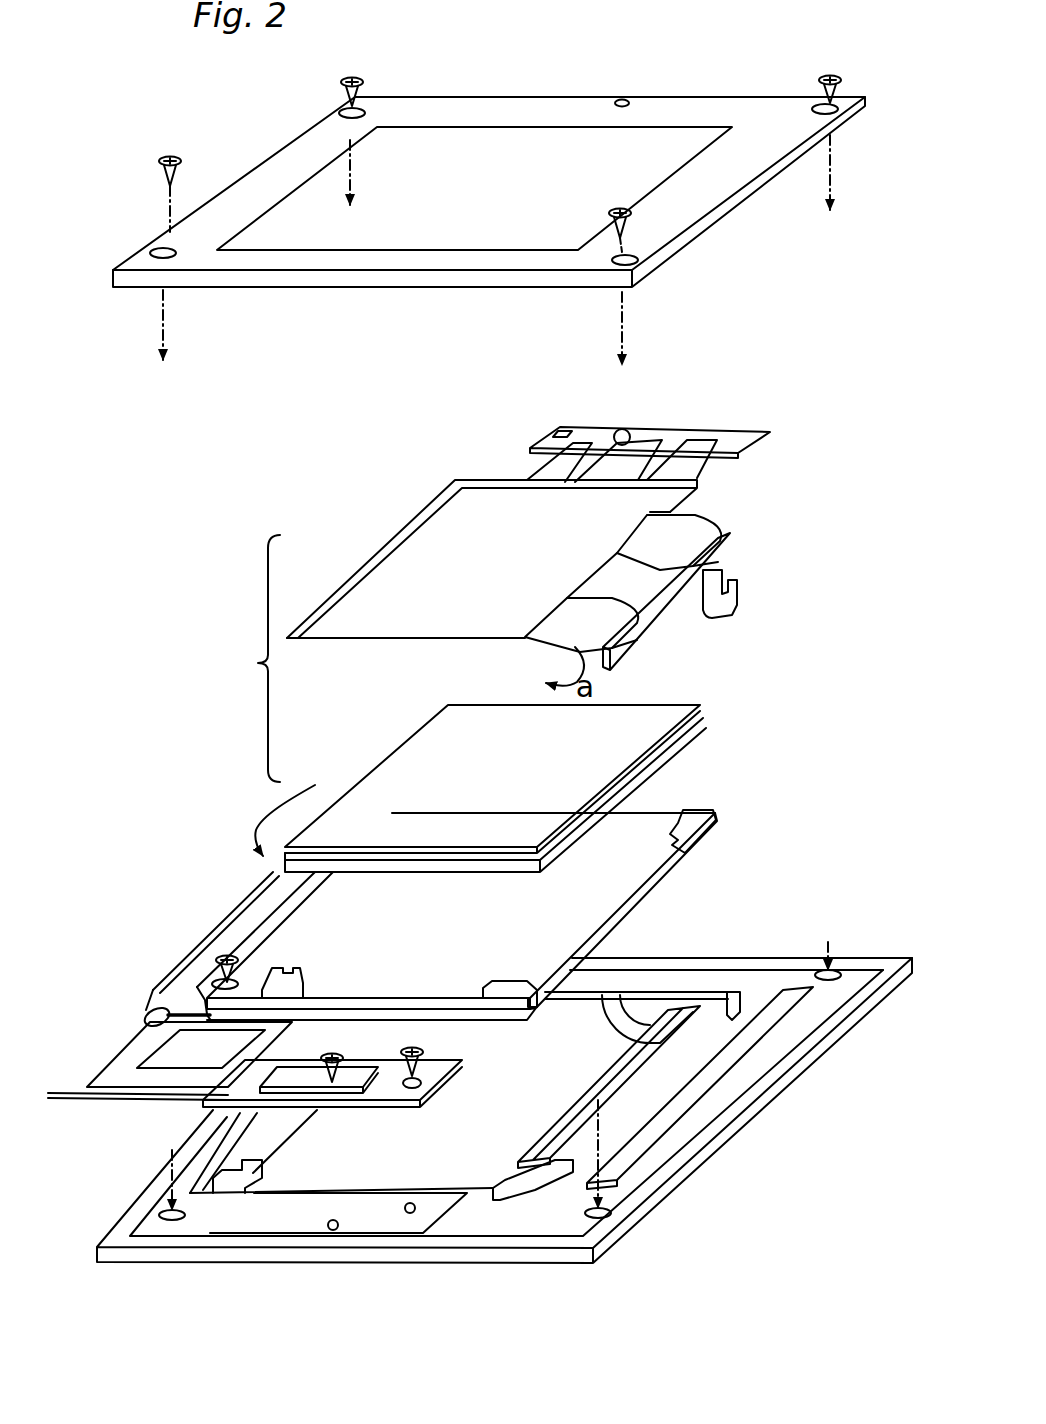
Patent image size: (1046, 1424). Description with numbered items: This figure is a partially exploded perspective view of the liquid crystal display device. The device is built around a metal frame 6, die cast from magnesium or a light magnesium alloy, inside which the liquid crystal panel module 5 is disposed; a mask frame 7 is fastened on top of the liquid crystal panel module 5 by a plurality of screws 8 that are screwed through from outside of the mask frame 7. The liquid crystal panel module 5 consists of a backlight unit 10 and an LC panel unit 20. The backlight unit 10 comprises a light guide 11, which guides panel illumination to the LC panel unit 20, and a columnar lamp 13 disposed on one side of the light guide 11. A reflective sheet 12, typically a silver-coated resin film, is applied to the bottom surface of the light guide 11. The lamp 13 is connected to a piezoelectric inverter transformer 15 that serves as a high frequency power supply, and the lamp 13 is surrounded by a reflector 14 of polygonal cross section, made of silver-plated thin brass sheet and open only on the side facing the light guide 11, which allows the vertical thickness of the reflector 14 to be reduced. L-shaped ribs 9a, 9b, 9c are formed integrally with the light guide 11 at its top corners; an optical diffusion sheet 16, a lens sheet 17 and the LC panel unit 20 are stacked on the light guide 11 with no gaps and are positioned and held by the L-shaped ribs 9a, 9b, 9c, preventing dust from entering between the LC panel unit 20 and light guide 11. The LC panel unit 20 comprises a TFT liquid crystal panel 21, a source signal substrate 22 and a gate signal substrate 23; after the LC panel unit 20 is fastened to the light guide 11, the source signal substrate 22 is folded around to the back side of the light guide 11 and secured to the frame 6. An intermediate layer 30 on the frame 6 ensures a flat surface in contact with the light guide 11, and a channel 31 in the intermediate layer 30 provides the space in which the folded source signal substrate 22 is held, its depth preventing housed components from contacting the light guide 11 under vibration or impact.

The liquid crystal panel module 5 is at (248, 658).
The metal frame 6 is at (448, 1256).
The mask frame 7 is at (300, 133).
The screws 8 is at (168, 157).
The L-shaped rib 9a is at (300, 972).
The L-shaped rib 9b is at (515, 980).
The L-shaped rib 9c is at (714, 812).
The backlight unit 10 is at (294, 802).
The light guide 11 is at (677, 860).
The reflective sheet 12 is at (612, 922).
The columnar lamp 13 is at (146, 1016).
The reflector 14 is at (212, 935).
The piezoelectric inverter transformer 15 is at (218, 1107).
The optical diffusion sheet 16 is at (680, 748).
The lens sheet 17 is at (685, 706).
The LC panel unit 20 is at (332, 596).
The TFT liquid crystal panel 21 is at (407, 525).
The source signal substrate 22 is at (735, 538).
The gate signal substrate 23 is at (703, 428).
The intermediate layer 30 is at (488, 1108).
The channel 31 is at (606, 1094).